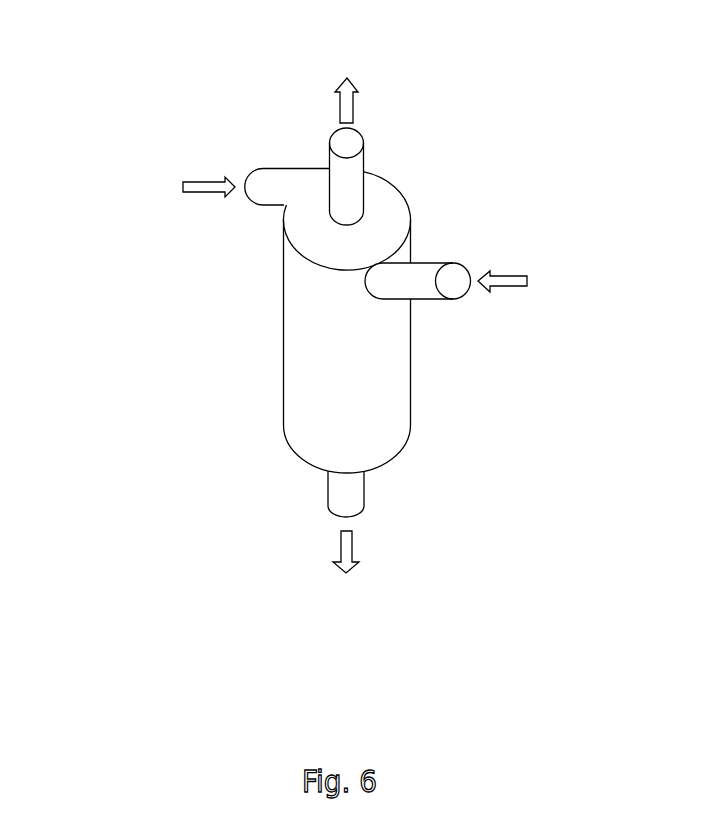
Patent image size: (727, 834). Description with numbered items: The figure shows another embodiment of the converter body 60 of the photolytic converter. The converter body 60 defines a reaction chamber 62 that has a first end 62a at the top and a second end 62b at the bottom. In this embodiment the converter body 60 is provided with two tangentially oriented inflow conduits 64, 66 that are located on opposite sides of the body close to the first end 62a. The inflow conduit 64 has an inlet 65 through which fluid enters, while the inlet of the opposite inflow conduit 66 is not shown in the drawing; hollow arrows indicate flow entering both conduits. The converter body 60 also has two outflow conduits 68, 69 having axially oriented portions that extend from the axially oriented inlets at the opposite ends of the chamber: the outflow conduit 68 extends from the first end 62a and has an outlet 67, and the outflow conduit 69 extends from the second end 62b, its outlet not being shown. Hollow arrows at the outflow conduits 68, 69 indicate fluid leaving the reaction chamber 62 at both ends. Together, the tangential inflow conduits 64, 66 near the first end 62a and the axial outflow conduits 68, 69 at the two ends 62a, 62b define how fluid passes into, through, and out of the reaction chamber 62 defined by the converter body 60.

The converter body 60 is at (251, 330).
The reaction chamber 62 is at (385, 368).
The first end 62a is at (385, 213).
The second end 62b is at (392, 463).
The inflow conduit 64 is at (425, 299).
The inlet 65 is at (452, 282).
The inflow conduit 66 is at (297, 168).
The outlet 67 is at (345, 140).
The outflow conduit 68 is at (363, 162).
The outflow conduit 69 is at (328, 499).